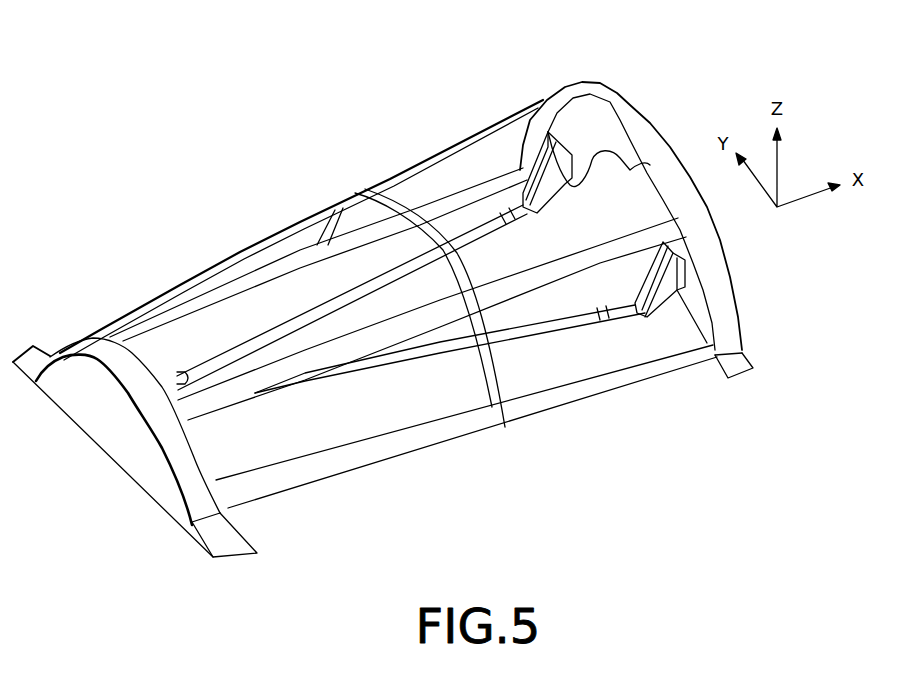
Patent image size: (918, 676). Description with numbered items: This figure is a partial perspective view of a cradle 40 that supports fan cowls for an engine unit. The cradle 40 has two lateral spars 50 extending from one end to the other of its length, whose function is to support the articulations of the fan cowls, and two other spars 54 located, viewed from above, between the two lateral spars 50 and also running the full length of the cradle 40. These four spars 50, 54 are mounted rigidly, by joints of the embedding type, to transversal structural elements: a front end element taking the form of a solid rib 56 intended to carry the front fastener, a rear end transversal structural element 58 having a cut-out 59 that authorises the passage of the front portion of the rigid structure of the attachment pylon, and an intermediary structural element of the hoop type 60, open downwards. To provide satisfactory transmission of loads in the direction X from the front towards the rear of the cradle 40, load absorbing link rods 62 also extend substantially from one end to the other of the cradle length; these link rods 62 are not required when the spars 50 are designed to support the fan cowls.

The cradle 40 is at (383, 301).
The lateral spars 50 is at (245, 285).
The spars 54 is at (423, 157).
The solid rib 56 is at (64, 346).
The rear end transversal structural element 58 is at (608, 103).
The cut-out 59 is at (628, 162).
The intermediary structural element of the hoop type 60 is at (393, 193).
The load absorbing link rods 62 is at (228, 357).